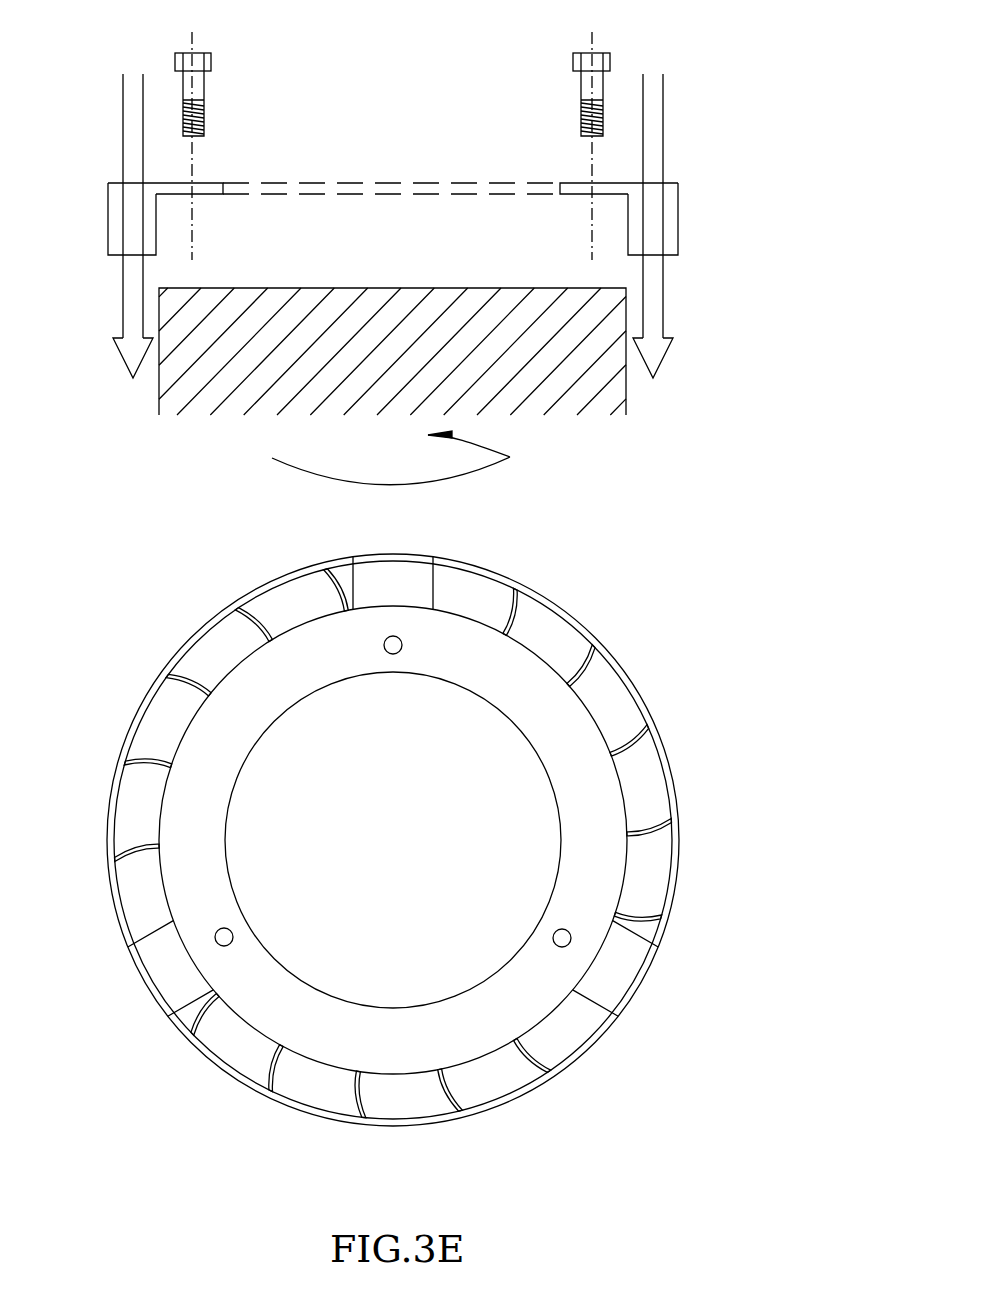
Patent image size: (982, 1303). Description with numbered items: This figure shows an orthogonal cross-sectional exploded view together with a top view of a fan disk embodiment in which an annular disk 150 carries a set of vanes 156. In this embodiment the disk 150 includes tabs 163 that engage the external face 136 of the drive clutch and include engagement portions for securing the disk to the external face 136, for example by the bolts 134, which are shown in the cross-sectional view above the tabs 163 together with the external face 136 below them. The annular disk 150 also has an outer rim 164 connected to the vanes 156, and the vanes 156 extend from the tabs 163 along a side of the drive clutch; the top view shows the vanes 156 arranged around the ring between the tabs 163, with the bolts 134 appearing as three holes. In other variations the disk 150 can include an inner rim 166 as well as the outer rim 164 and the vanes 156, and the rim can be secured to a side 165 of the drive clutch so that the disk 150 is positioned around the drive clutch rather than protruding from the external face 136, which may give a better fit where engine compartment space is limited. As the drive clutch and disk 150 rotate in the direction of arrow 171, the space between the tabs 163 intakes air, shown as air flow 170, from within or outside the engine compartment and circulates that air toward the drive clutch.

The bolts 134 is at (212, 62).
The external face 136 is at (350, 288).
The annular disk 150 is at (742, 179).
The vanes 156 is at (520, 610).
The tabs 163 is at (210, 182).
The outer rim 164 is at (108, 222).
The side 165 is at (159, 383).
The inner rim 166 is at (157, 222).
The air flow 170 is at (121, 133).
The arrow 171 is at (510, 457).